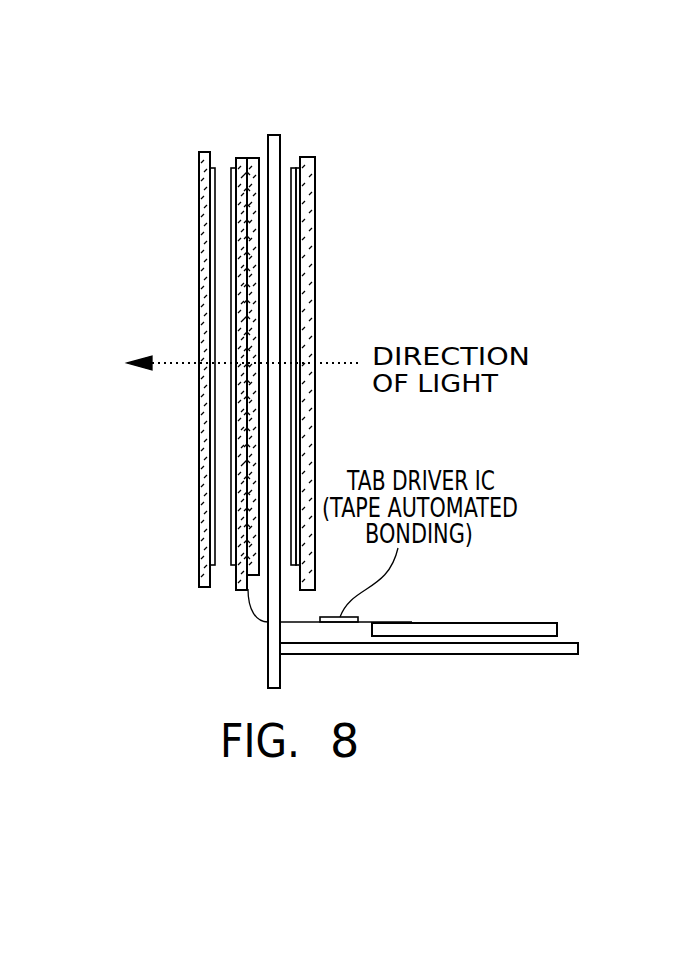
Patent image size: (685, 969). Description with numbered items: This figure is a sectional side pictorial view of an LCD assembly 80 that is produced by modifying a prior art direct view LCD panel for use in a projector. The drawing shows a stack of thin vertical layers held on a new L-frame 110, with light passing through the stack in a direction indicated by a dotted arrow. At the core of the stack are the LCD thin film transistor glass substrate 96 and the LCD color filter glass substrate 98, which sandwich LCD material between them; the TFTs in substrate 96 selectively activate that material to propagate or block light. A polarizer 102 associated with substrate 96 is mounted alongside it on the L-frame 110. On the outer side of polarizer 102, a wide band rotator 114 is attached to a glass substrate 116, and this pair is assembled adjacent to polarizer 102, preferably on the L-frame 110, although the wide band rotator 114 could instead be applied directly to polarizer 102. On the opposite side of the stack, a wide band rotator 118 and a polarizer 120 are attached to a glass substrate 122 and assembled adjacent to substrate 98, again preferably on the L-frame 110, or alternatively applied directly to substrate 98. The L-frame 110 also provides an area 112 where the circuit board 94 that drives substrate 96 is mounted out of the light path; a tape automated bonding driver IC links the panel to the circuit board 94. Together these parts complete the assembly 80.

The LCD assembly 80 is at (112, 597).
The circuit board 94 is at (462, 623).
The LCD thin film transistor glass substrate 96 is at (242, 157).
The LCD color filter glass substrate 98 is at (255, 157).
The polarizer 102 is at (233, 167).
The L-frame 110 is at (278, 633).
The area for mounting circuit board 112 is at (424, 653).
The wide band rotator 114 is at (213, 176).
The glass substrate 116 is at (199, 231).
The wide band rotator 118 is at (300, 183).
The polarizer 120 is at (293, 167).
The glass substrate 122 is at (315, 227).